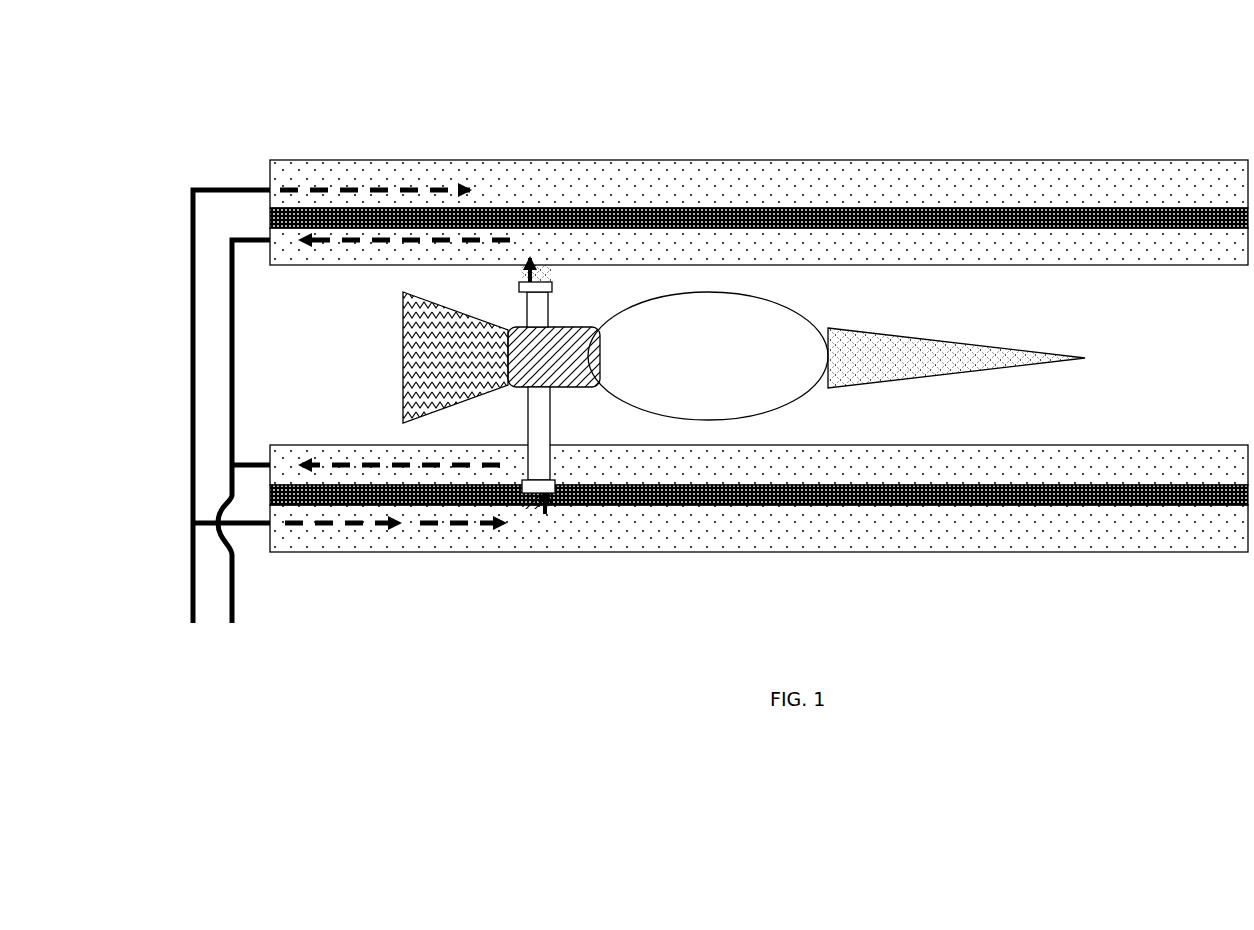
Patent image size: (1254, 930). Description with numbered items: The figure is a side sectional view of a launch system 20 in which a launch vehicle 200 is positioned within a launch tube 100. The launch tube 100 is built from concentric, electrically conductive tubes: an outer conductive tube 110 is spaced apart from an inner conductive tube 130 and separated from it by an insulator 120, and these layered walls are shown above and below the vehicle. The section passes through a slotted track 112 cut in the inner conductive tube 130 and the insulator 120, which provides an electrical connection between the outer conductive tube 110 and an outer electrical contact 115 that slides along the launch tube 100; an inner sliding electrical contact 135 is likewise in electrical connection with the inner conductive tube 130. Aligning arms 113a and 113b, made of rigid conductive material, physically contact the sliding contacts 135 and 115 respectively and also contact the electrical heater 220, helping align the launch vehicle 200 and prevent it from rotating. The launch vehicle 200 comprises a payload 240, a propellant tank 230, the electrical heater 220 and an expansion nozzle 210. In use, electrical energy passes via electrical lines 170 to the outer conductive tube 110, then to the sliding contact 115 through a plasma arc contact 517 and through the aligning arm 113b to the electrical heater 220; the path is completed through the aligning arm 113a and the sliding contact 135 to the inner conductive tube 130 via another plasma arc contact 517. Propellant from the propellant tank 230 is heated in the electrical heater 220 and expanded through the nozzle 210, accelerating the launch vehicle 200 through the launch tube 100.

The launch system 20 is at (326, 68).
The launch tube 100 is at (723, 187).
The outer conductive tube 110 is at (978, 192).
The insulator 120 is at (1120, 208).
The inner conductive tube 130 is at (1212, 240).
The electrical lines 170 is at (256, 583).
The launch vehicle 200 is at (668, 365).
The expansion nozzle 210 is at (402, 367).
The electrical heater 220 is at (578, 378).
The propellant tank 230 is at (712, 328).
The payload 240 is at (923, 360).
The aligning arm 113a is at (552, 312).
The aligning arm 113b is at (528, 428).
The inner sliding electrical contact 135 is at (552, 283).
The slotted track 112 is at (553, 497).
The outer electrical contact 115 is at (513, 494).
The plasma arc contact 517 is at (535, 270).